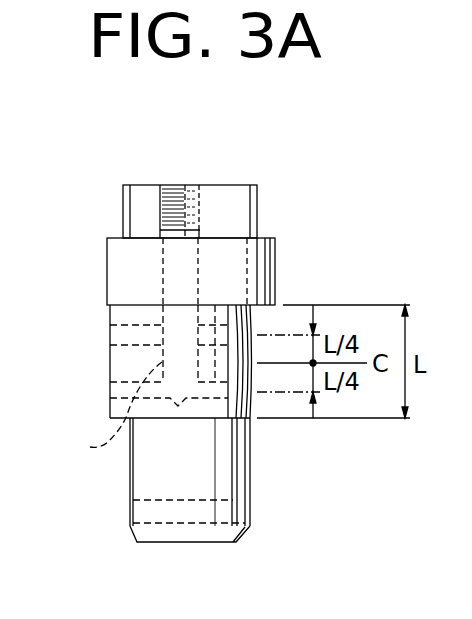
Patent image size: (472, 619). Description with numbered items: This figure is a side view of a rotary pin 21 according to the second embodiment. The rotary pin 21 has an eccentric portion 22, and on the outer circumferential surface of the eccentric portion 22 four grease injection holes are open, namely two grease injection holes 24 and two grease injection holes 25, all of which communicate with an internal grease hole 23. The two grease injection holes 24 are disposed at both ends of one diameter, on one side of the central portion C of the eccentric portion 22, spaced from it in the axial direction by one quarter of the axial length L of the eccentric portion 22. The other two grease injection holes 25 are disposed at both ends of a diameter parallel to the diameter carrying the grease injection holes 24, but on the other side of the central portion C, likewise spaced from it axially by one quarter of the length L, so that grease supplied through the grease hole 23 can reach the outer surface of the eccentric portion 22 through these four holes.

The rotary pin 21 is at (239, 177).
The eccentric portion 22 is at (110, 368).
The grease hole 23 is at (136, 380).
The grease injection hole 24 is at (110, 333).
The grease injection hole 25 is at (110, 396).